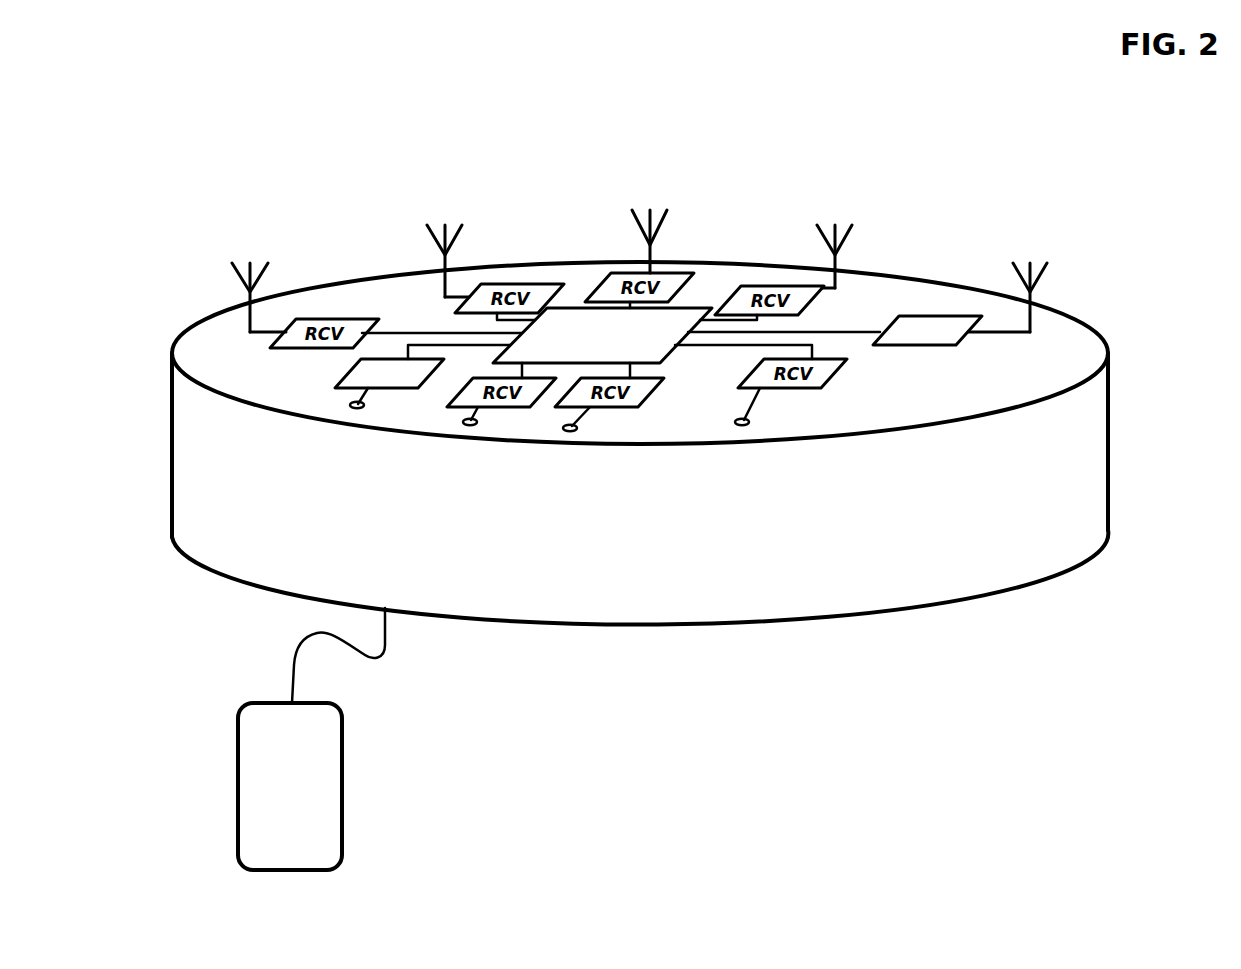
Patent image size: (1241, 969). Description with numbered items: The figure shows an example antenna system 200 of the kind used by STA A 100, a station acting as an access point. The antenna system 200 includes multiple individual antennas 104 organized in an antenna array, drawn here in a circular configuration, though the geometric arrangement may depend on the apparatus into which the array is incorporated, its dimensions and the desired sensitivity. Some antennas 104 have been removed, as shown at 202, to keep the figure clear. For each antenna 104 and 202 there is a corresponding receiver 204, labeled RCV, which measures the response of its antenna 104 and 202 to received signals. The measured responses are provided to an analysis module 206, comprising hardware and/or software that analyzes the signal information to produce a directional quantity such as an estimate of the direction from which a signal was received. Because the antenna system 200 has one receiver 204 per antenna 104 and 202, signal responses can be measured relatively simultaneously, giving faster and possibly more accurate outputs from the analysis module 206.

The STA A 100 is at (267, 773).
The antenna 104 is at (246, 318).
The antenna system 200 is at (636, 443).
The removed antenna 202 is at (378, 410).
The receiver 204 is at (927, 362).
The analysis module 206 is at (610, 362).